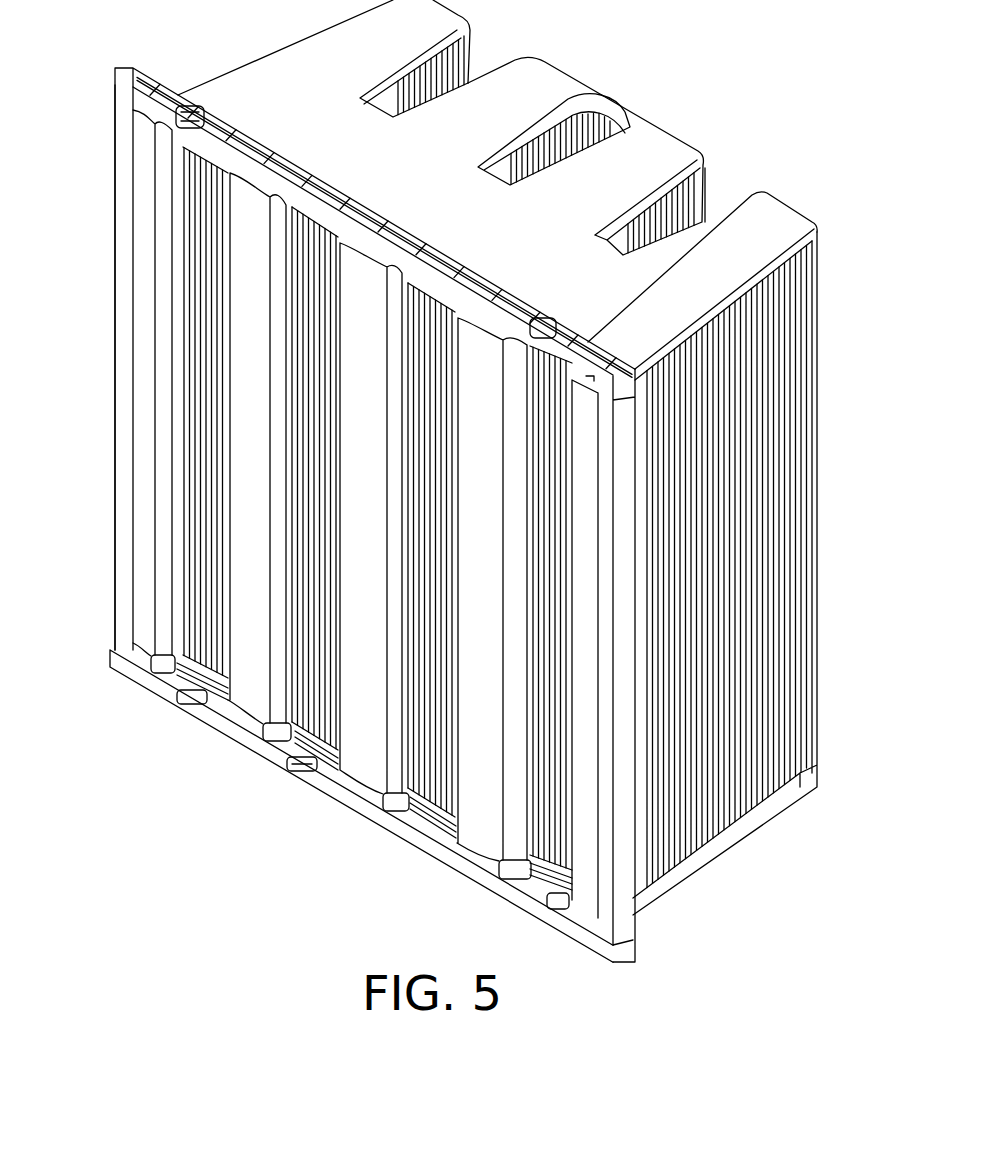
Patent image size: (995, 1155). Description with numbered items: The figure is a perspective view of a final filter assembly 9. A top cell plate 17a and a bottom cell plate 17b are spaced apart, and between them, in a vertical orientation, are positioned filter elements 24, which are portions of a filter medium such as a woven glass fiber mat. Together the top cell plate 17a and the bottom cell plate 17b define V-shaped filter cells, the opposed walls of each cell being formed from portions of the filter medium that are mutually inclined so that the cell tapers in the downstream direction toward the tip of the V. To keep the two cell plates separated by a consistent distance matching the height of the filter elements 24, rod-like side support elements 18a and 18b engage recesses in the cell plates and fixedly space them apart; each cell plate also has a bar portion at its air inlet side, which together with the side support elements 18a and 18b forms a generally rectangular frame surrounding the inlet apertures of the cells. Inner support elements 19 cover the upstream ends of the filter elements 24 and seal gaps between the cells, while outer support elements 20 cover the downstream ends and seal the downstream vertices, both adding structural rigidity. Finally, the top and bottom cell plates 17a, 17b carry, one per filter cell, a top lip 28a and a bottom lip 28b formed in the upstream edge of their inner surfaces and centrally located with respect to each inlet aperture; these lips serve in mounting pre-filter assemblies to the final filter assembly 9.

The final filter assembly 9 is at (648, 108).
The top cell plate 17a is at (768, 214).
The bottom cell plate 17b is at (533, 873).
The side support element 18a is at (623, 913).
The side support element 18b is at (120, 575).
The inner support element 19 is at (482, 833).
The outer support element 20 is at (808, 475).
The filter element 24 is at (800, 423).
The top lip 28a is at (312, 210).
The bottom lip 28b is at (300, 758).